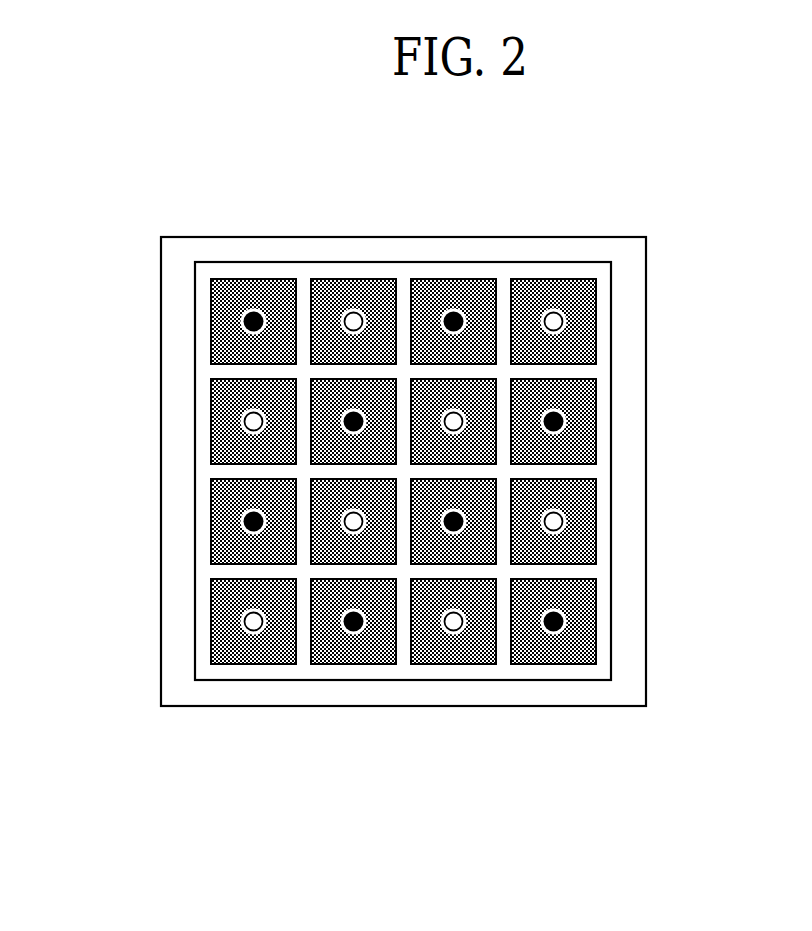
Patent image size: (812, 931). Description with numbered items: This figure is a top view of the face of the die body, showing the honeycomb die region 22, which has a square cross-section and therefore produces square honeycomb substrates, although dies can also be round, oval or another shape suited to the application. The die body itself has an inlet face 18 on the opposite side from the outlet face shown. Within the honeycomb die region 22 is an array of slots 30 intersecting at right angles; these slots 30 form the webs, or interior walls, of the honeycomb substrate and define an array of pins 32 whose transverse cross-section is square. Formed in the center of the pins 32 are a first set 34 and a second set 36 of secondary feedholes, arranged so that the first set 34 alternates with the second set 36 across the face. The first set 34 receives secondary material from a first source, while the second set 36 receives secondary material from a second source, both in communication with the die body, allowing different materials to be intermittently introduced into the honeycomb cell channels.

The inlet face 18 is at (420, 475).
The honeycomb die region 22 is at (423, 258).
The slots 30 is at (398, 542).
The pins 32 is at (528, 635).
The first set of secondary feedholes 34 is at (243, 323).
The second set of secondary feedholes 36 is at (562, 526).